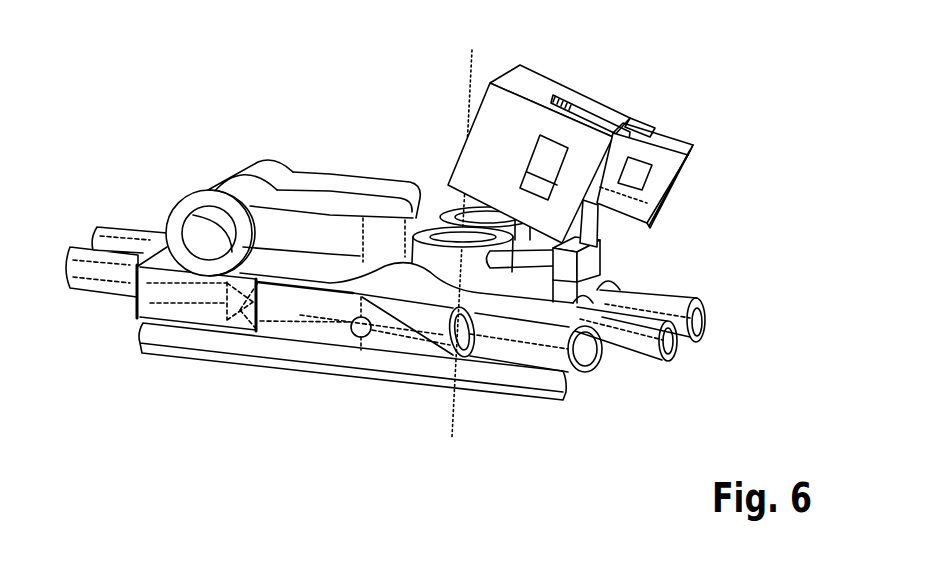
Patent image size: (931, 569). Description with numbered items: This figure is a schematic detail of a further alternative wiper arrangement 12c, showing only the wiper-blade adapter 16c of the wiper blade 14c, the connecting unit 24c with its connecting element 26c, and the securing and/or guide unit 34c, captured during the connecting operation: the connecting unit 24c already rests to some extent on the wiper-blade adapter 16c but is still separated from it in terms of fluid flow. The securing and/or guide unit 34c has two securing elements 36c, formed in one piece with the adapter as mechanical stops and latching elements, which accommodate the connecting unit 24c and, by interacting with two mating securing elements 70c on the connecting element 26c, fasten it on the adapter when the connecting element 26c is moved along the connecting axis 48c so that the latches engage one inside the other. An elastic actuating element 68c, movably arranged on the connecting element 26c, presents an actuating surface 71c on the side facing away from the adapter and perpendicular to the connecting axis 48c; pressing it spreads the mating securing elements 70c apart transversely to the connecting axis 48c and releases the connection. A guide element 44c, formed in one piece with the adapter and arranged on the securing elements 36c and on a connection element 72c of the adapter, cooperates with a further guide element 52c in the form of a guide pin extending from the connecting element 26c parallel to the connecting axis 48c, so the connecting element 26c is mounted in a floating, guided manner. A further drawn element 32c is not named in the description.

The wiper arrangement 12c is at (122, 108).
The wiper blade 14c is at (112, 184).
The wiper-blade adapter 16c is at (294, 388).
The connecting unit 24c is at (688, 115).
The connecting element 26c is at (605, 148).
The mounting block 32c is at (93, 313).
The securing and/or guide unit 34c is at (768, 202).
The securing elements 36c is at (607, 250).
The guide element 44c is at (603, 273).
The connecting axis 48c is at (467, 75).
The further guide element 52c is at (520, 296).
The actuating element 68c is at (605, 110).
The mating securing elements 70c is at (645, 220).
The actuating surface 71c is at (583, 97).
The connection element 72c is at (453, 258).